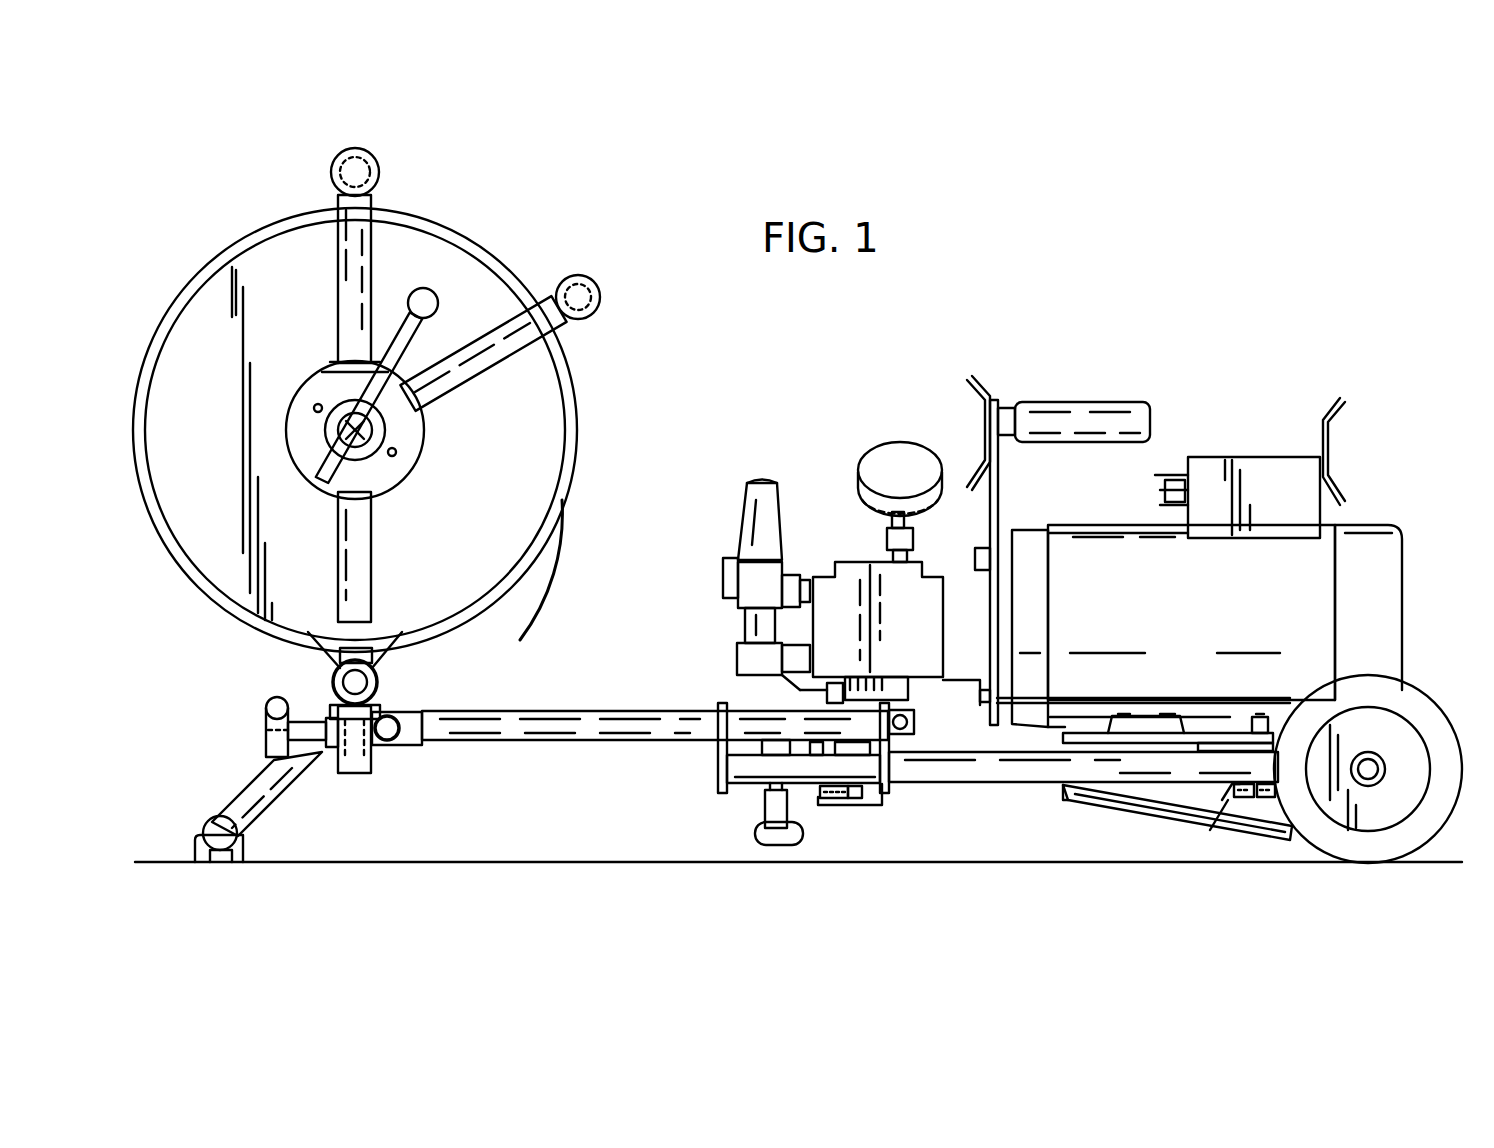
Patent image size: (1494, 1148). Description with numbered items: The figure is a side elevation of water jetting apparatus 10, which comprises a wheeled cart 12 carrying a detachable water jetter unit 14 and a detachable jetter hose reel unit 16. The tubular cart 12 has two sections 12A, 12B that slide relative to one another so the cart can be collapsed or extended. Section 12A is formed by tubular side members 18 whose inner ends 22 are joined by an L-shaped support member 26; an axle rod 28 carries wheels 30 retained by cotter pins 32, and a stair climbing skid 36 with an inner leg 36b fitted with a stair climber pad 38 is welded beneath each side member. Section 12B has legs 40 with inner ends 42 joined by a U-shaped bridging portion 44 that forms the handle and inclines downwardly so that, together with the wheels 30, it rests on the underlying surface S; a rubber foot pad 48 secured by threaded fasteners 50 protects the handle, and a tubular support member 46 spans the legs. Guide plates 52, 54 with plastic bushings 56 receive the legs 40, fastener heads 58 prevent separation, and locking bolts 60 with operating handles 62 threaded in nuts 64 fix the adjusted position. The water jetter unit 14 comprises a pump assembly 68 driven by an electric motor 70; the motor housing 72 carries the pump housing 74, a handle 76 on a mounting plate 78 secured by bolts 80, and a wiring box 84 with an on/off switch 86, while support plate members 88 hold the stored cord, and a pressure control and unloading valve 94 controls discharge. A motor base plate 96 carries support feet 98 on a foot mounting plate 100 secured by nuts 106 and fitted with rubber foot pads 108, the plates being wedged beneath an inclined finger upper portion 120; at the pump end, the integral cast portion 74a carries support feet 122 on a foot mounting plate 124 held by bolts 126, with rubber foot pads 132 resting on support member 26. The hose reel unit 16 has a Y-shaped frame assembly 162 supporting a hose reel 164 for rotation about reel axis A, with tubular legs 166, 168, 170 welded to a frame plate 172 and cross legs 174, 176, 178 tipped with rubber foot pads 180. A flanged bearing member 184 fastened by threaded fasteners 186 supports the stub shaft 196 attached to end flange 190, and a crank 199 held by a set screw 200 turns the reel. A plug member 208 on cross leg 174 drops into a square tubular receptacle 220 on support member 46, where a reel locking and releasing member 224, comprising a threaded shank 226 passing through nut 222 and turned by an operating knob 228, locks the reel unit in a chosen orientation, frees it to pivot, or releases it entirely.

The water jetting apparatus 10 is at (986, 288).
The wheeled cart 12 is at (615, 705).
The cart section 12A is at (1010, 788).
The cart section 12B is at (522, 746).
The water jetter unit 14 is at (1172, 447).
The jetter hose reel unit 16 is at (497, 243).
The tubular side members 18 is at (978, 786).
The inner ends 22 is at (745, 783).
The L-shaped support member 26 is at (890, 800).
The axle rod 28 is at (1386, 762).
The wheels 30 is at (1422, 830).
The cotter pins 32 is at (1372, 760).
The stair climbing skid 36 is at (1160, 818).
The inner leg 36b is at (1135, 800).
The stair climber pad 38 is at (1215, 832).
The legs 40 is at (560, 712).
The inner ends 42 is at (945, 690).
The U-shaped bridging portion 44 is at (205, 825).
The tubular support member 46 is at (400, 718).
The foot pad 48 is at (196, 850).
The threaded fasteners 50 is at (238, 852).
The support and guide plates 52 is at (720, 768).
The support and guide plates 54 is at (892, 770).
The bushings 56 is at (720, 712).
The fastener heads 58 is at (916, 722).
The locking bolts 60 is at (760, 805).
The operating handles 62 is at (790, 845).
The nuts 64 is at (763, 750).
The pump assembly 68 is at (815, 540).
The electric motor 70 is at (1068, 527).
The motor housing 72 is at (1105, 545).
The pump housing 74 is at (850, 560).
The integral cast portion 74a is at (885, 690).
The handle 76 is at (1097, 410).
The mounting plate 78 is at (993, 400).
The bolts 80 is at (980, 548).
The wiring box 84 is at (1265, 465).
The on/off switch 86 is at (1168, 495).
The support plate members 88 is at (968, 380).
The pressure control and unloading valve 94 is at (735, 525).
The motor base plate 96 is at (1093, 738).
The jetter unit support feet 98 is at (1250, 812).
The foot mounting plate 100 is at (1225, 745).
The nuts 106 is at (1258, 716).
The rubber foot pads 108 is at (1228, 796).
The upper portion 120 is at (1325, 690).
The support feet 122 is at (850, 800).
The foot mounting plate 124 is at (855, 665).
The bolts 126 is at (770, 688).
The rubber foot pad 132 is at (870, 800).
The frame assembly 162 is at (478, 386).
The hose reel 164 is at (255, 228).
The tubular leg 166 is at (362, 574).
The tubular leg 168 is at (515, 345).
The tubular leg 170 is at (362, 255).
The frame plate 172 is at (322, 370).
The tubular leg member 174 is at (315, 650).
The tubular leg member 176 is at (600, 282).
The tubular leg member 178 is at (372, 160).
The rubber foot pads 180 is at (338, 160).
The flanged bearing member 184 is at (375, 468).
The threaded fasteners 186 is at (400, 447).
The end flange 190 is at (530, 514).
The stub shaft 196 is at (340, 432).
The crank 199 is at (438, 303).
The set screw 200 is at (385, 433).
The plug member 208 is at (385, 688).
The square tubular receptacle 220 is at (360, 772).
The nut 222 is at (338, 745).
The reel locking and releasing member 224 is at (268, 712).
The threaded shank 226 is at (330, 716).
The operating knob 228 is at (270, 750).
The reel axis A is at (330, 410).
The underlying surface S is at (530, 861).